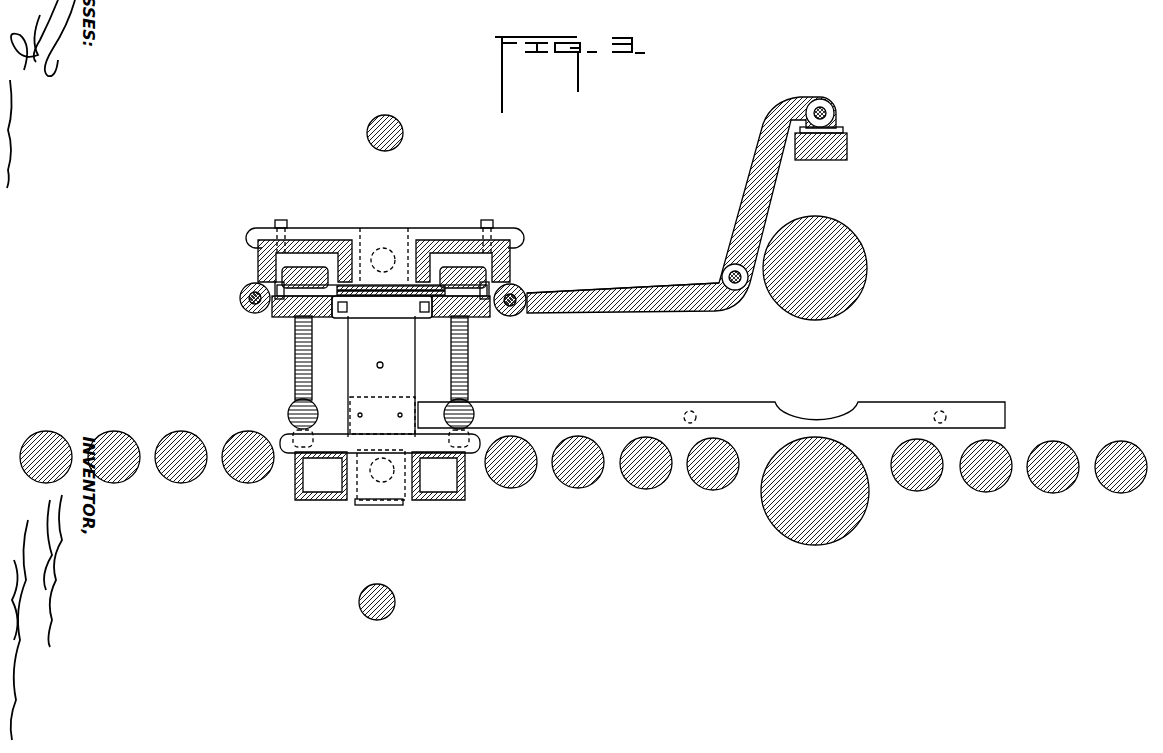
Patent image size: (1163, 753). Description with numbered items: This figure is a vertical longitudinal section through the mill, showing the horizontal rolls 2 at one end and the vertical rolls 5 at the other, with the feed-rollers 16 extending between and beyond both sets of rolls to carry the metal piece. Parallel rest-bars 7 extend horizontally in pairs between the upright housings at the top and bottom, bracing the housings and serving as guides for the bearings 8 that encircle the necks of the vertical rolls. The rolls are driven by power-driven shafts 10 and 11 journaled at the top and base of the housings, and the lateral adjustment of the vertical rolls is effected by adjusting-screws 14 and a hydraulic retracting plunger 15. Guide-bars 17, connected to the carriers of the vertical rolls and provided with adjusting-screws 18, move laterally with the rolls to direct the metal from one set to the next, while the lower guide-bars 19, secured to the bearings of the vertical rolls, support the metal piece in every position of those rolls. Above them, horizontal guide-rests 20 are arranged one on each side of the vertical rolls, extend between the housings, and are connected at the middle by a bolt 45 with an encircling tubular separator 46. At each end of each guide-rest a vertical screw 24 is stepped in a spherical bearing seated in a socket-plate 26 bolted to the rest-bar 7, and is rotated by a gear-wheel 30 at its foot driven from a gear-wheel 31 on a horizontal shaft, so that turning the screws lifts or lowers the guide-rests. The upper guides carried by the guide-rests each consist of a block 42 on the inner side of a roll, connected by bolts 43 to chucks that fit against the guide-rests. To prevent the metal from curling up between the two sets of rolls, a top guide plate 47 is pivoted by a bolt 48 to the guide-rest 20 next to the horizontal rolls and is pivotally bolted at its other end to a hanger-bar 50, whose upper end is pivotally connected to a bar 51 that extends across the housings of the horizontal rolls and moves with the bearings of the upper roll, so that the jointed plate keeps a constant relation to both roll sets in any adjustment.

The horizontal rolls 2 is at (815, 380).
The vertical rolls 5 is at (381, 376).
The rest-bars 7 is at (318, 241).
The bearings 8 is at (380, 477).
The power-driven shaft 10 is at (403, 133).
The power-driven shaft 11 is at (390, 598).
The adjusting-screws 14 is at (388, 373).
The hydraulic retracting plunger 15 is at (383, 368).
The feed-rollers 16 is at (583, 462).
The guide-bars 17 is at (711, 415).
The adjusting-screws 18 is at (830, 417).
The lower guide-bars 19 is at (380, 446).
The guide-rests 20 is at (268, 313).
The vertical screw 24 is at (295, 360).
The socket-plate 26 is at (380, 442).
The gear-wheel 30 is at (293, 436).
The gear-wheel 31 is at (293, 411).
The block or casting 42 is at (364, 318).
The bolts 43 is at (341, 312).
The bolt 45 is at (290, 316).
The tubular separator 46 is at (398, 306).
The top guide bar or plate 47 is at (607, 293).
The bolt 48 is at (524, 293).
The hanger-bar 50 is at (681, 205).
The bar 51 is at (821, 143).